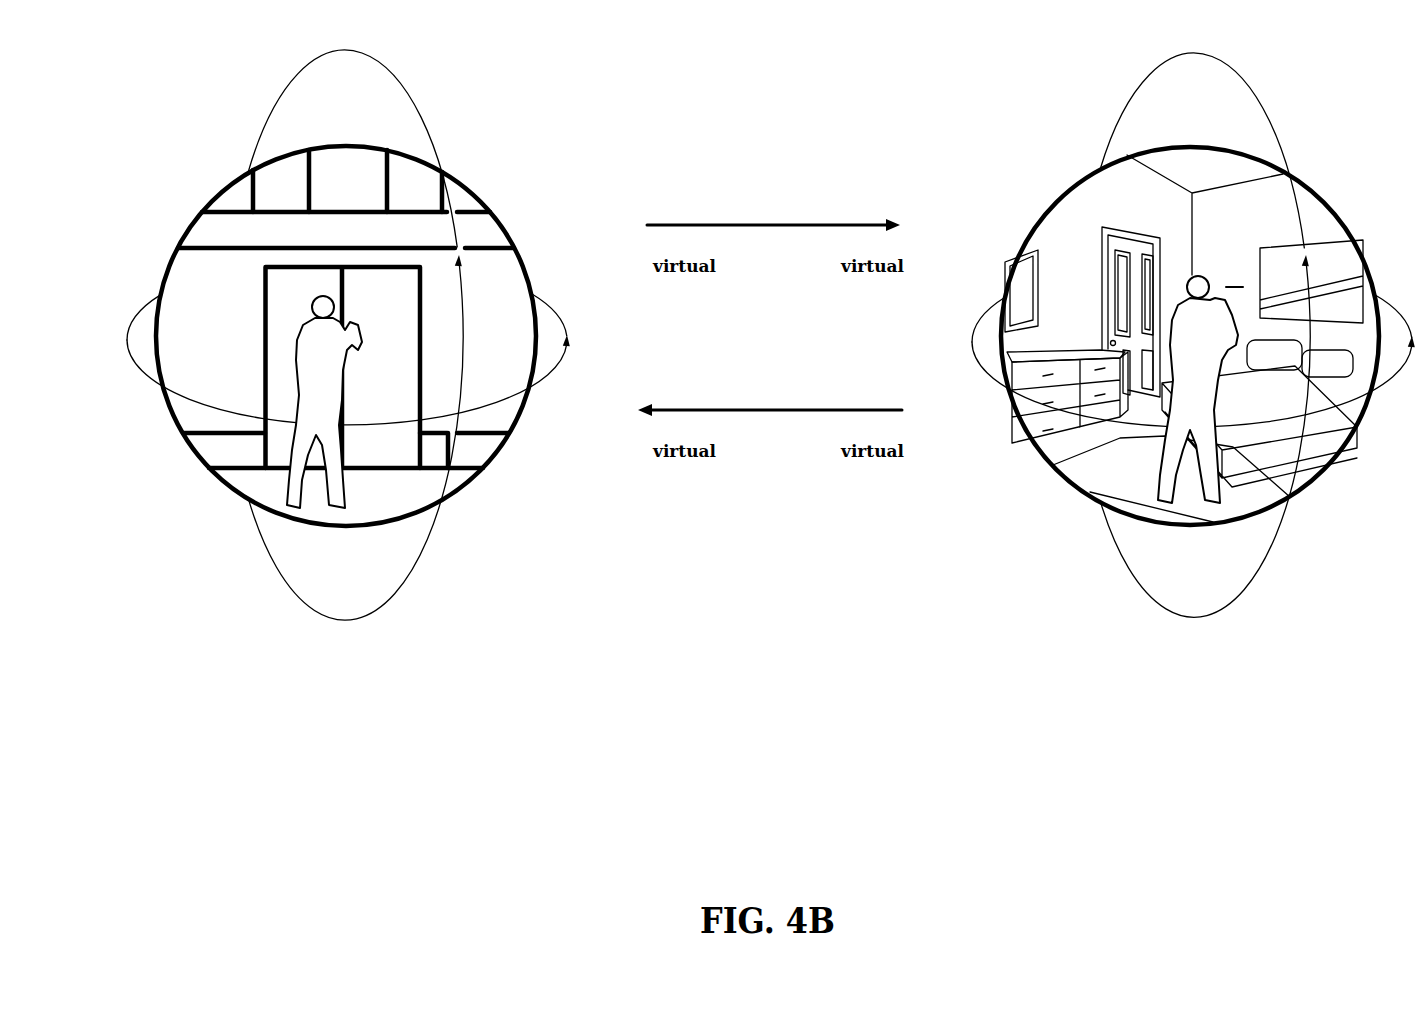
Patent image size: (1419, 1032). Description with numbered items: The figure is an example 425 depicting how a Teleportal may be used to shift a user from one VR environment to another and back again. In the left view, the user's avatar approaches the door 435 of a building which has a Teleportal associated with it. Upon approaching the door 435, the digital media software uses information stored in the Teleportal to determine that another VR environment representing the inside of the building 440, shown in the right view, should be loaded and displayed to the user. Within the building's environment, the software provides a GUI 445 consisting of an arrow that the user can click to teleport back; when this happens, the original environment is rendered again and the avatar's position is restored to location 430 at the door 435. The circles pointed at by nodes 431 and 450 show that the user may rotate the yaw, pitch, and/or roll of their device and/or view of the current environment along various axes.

The example 425 is at (215, 72).
The location 430 is at (310, 508).
The circle 431 is at (306, 613).
The door 435 is at (400, 329).
The inside of the building 440 is at (1066, 233).
The GUI 445 is at (1240, 262).
The circle 450 is at (1103, 553).